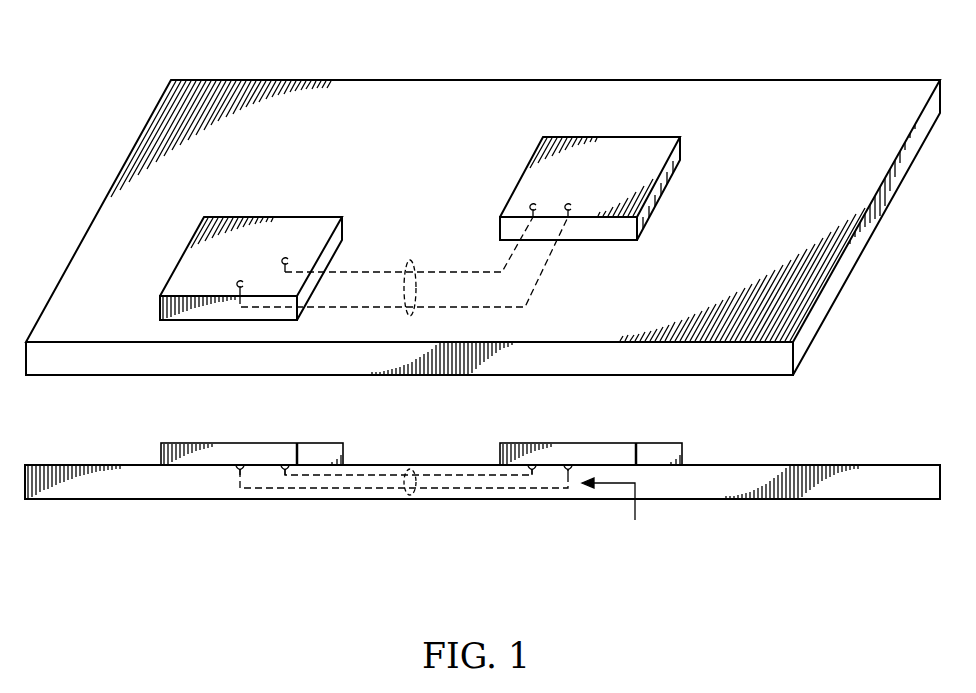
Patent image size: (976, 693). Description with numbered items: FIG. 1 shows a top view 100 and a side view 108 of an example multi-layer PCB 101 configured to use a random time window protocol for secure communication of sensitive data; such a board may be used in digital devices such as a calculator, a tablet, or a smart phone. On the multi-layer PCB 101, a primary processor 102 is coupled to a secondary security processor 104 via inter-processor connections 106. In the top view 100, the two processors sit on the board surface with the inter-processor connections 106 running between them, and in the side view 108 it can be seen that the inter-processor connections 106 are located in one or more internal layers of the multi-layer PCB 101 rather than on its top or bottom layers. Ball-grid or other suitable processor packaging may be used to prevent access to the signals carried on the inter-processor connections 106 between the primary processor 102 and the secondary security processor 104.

The top view 100 is at (798, 90).
The multi-layer PCB 101 is at (660, 80).
The primary processor 102 is at (683, 149).
The secondary security processor 104 is at (183, 256).
The inter-processor connections 106 is at (409, 261).
The side view 108 is at (190, 500).